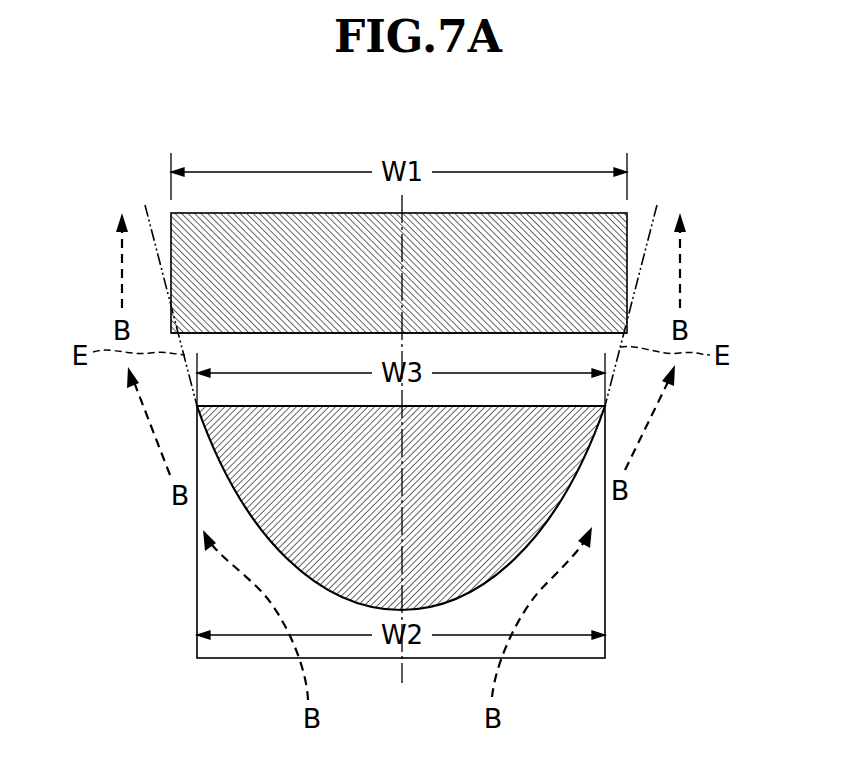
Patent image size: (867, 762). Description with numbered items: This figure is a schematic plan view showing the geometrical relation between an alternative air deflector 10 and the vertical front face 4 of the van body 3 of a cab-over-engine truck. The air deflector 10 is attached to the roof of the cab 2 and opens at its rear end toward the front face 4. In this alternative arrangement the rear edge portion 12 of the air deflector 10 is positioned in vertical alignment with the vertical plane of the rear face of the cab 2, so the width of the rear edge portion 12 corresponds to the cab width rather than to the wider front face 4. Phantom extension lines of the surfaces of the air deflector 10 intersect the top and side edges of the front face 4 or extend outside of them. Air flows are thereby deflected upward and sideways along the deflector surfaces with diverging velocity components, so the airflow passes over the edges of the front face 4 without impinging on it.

The van body 3 is at (399, 273).
The front face 4 is at (207, 333).
The cab 2 is at (401, 532).
The air deflector 10 is at (401, 508).
The rear edge portion 12 is at (518, 404).